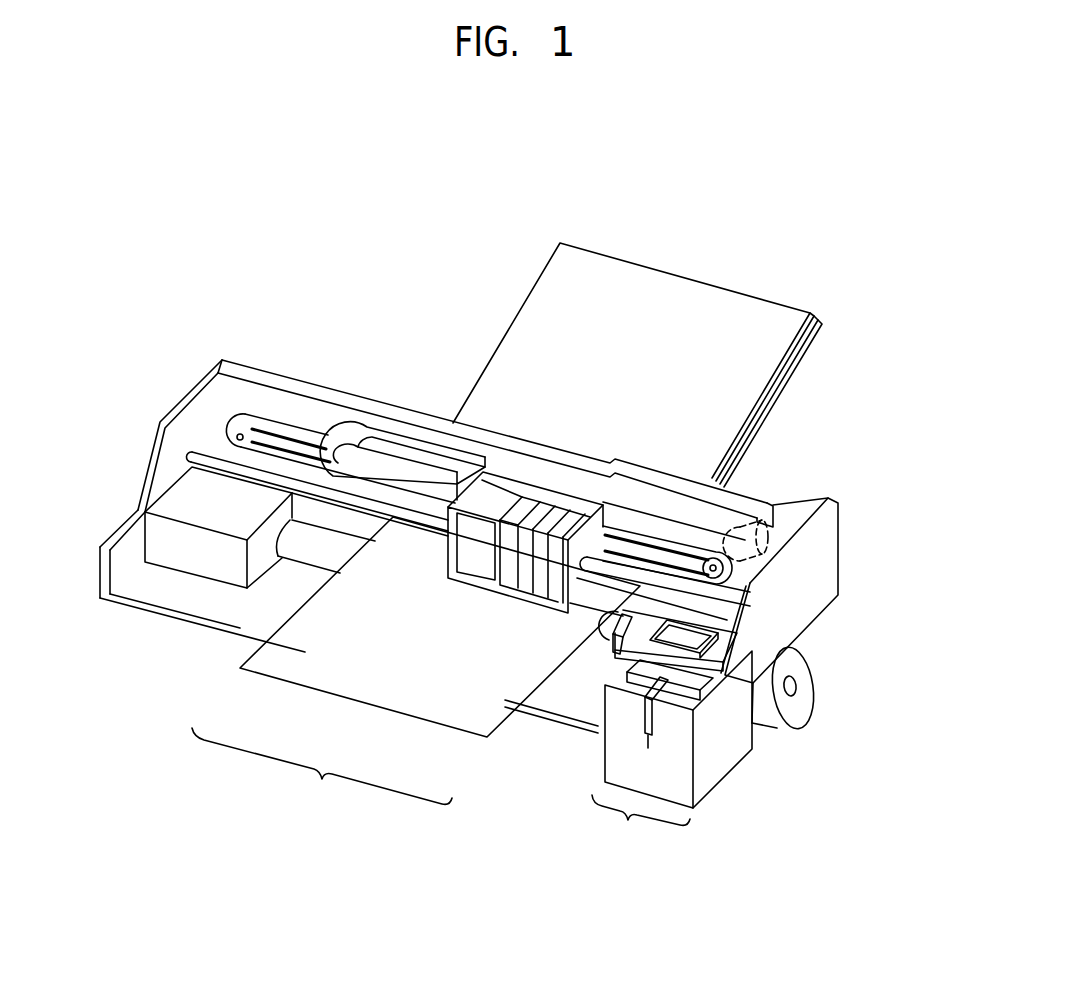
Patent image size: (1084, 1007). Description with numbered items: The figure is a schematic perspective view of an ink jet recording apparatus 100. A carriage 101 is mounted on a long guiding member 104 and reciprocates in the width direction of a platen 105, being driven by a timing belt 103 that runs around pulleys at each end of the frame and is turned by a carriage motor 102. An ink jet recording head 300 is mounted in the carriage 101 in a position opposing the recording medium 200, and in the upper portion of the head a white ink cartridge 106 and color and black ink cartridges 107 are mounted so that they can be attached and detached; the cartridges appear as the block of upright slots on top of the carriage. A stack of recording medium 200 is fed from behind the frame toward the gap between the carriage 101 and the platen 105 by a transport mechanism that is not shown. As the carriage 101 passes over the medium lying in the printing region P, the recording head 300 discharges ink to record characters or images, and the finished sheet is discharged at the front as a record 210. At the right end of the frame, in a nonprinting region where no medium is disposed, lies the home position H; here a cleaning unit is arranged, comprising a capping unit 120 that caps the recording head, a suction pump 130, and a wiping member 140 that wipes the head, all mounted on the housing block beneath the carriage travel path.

The ink jet recording apparatus 100 is at (925, 228).
The carriage 101 is at (537, 596).
The carriage motor 102 is at (740, 518).
The timing belt 103 is at (290, 432).
The guiding member 104 is at (208, 458).
The platen 105 is at (318, 548).
The white ink cartridge 106 is at (497, 498).
The color and black ink cartridges 107 is at (543, 507).
The capping unit 120 is at (692, 640).
The suction pump 130 is at (724, 672).
The wiping member 140 is at (638, 663).
The recording medium 200 is at (690, 298).
The record 210 is at (373, 690).
The ink jet recording head 300 is at (476, 592).
The printing region P is at (322, 771).
The home position H is at (628, 755).